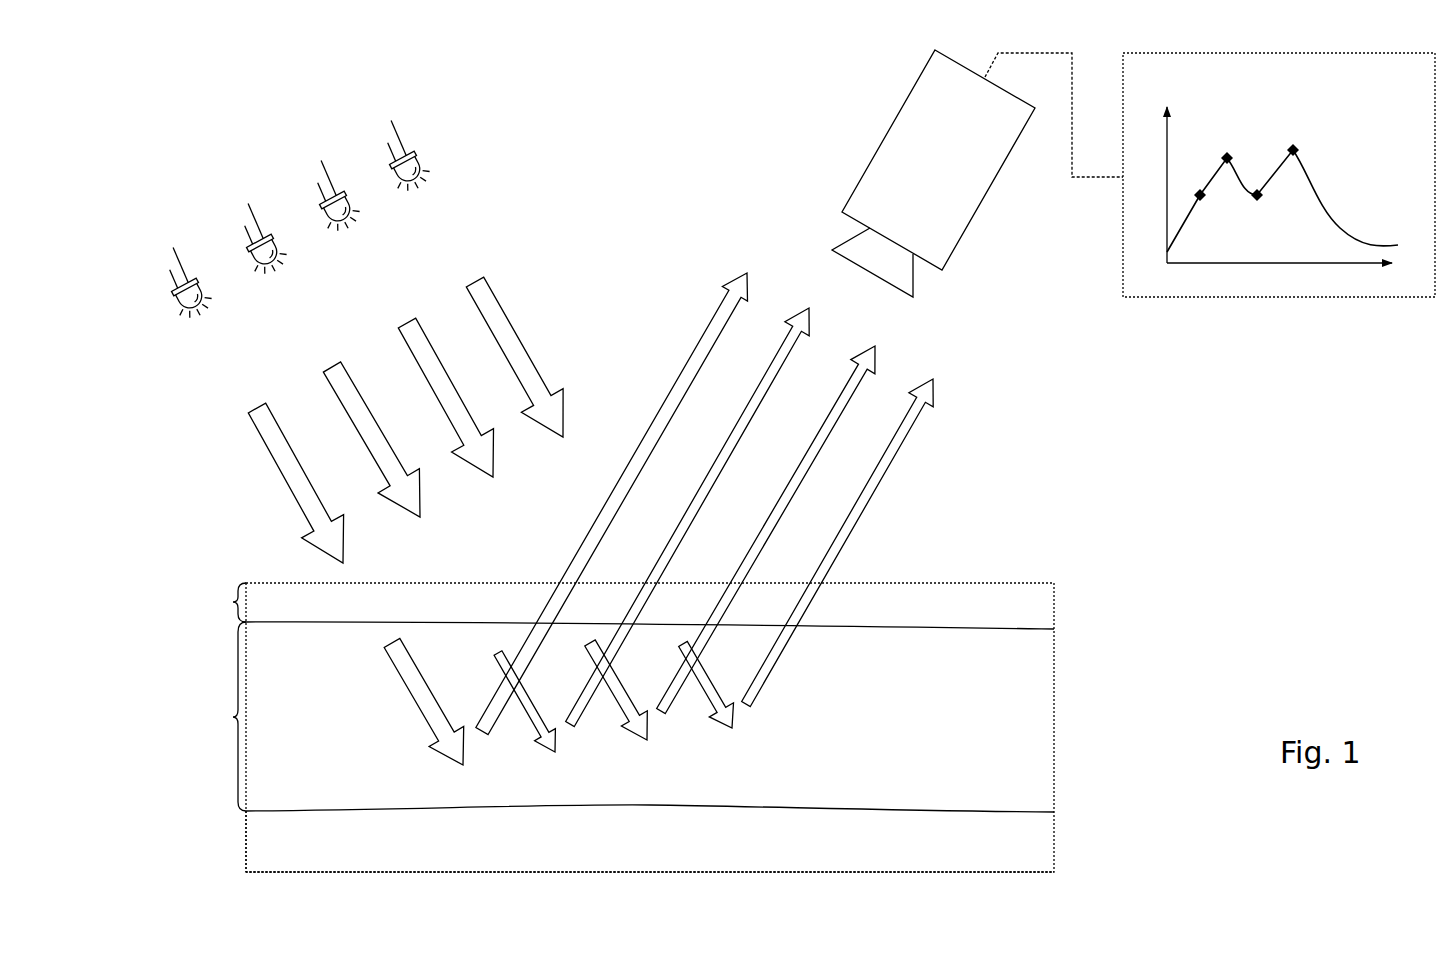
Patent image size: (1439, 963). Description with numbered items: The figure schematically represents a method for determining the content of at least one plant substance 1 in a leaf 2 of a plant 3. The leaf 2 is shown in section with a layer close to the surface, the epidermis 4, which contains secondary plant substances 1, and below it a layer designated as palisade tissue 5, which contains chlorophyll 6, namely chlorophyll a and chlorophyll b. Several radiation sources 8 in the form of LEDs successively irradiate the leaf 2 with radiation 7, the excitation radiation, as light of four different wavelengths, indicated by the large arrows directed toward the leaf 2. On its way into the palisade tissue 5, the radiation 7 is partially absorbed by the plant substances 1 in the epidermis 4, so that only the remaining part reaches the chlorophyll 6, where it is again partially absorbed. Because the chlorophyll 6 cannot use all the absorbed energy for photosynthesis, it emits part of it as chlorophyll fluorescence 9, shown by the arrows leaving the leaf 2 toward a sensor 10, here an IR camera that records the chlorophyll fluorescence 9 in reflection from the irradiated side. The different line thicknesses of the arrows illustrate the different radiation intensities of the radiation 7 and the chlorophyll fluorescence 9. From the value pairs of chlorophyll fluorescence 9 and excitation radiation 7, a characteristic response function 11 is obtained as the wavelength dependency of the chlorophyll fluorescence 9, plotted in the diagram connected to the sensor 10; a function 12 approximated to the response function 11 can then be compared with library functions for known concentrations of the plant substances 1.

The plant substance 1 is at (1008, 610).
The leaf 2 is at (604, 841).
The plant 3 is at (275, 842).
The epidermis 4 is at (230, 603).
The palisade tissue 5 is at (230, 718).
The chlorophyll 6 is at (1017, 728).
The radiation 7 is at (525, 291).
The radiation sources 8 is at (450, 145).
The chlorophyll fluorescence 9 is at (665, 351).
The sensor 10 is at (893, 170).
The response function 11 is at (1279, 210).
The function 12 is at (1330, 210).